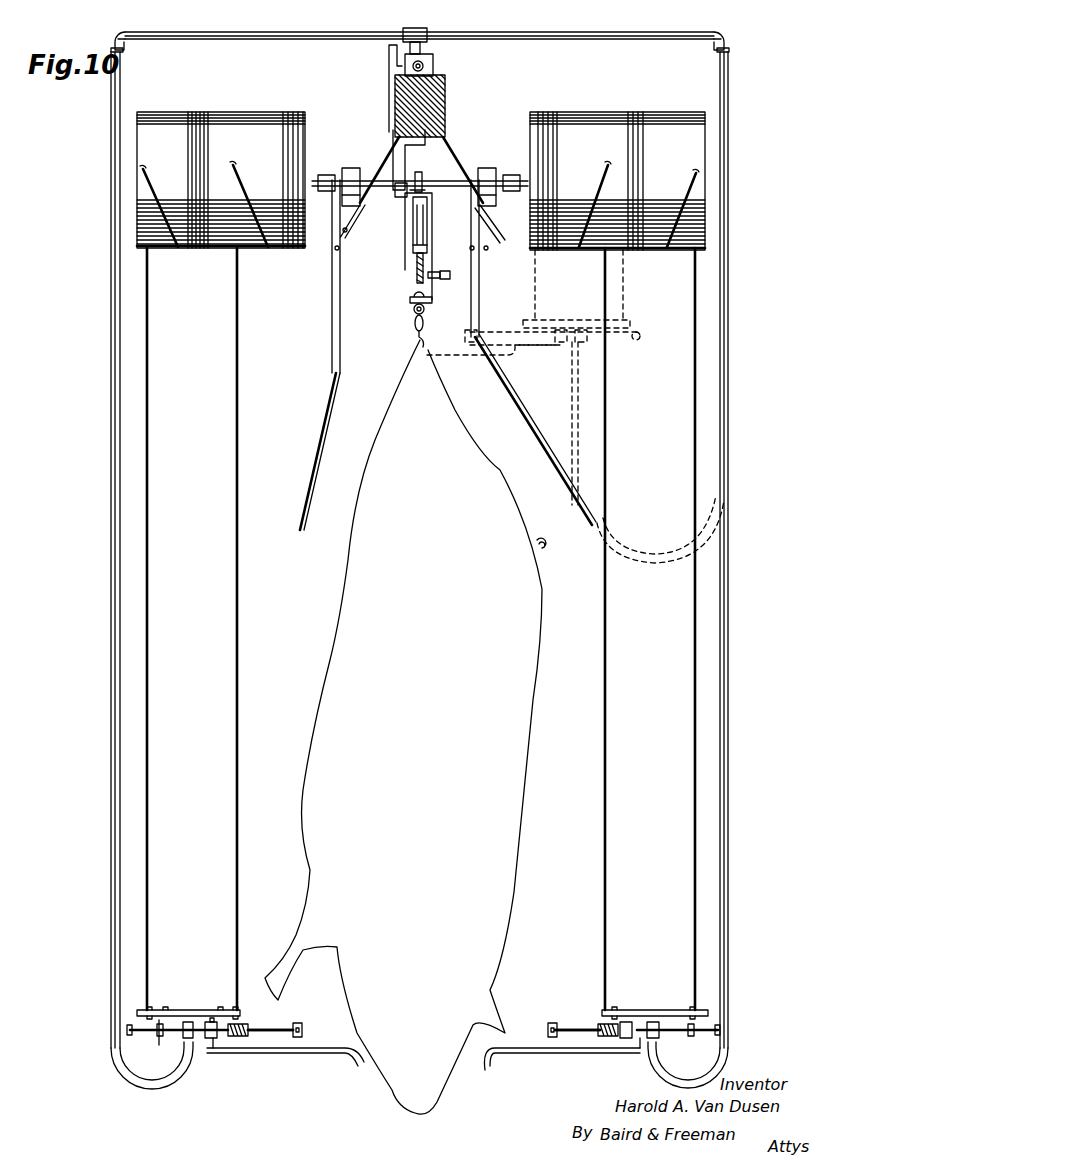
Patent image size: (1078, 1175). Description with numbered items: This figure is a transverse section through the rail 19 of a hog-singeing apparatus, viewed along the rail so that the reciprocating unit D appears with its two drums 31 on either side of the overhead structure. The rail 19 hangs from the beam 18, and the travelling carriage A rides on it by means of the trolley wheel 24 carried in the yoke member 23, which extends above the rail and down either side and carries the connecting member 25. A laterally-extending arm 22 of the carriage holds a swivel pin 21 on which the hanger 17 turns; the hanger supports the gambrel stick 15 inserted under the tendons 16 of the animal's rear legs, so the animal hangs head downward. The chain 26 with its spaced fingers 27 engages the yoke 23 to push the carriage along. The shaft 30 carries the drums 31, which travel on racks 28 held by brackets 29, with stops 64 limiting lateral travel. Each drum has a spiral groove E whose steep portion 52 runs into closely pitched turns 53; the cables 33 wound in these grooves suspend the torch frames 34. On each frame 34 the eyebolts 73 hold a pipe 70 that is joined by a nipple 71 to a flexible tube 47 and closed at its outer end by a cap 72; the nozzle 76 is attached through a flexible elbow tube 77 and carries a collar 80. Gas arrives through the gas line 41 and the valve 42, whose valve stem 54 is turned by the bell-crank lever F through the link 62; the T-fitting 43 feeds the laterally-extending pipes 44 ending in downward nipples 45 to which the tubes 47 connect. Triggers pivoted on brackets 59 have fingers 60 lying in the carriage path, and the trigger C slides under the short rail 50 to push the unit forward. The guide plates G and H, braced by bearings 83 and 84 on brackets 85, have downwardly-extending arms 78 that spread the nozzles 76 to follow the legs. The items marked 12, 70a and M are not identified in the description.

The carcass conveyor rail 12 is at (186, 48).
The gambrel stick 15 is at (419, 340).
The tendons 16 is at (440, 356).
The hanger 17 is at (415, 325).
The beam 18 is at (447, 78).
The rail 19 is at (414, 277).
The swivel pin 21 is at (414, 310).
The laterally-extending arm 22 is at (410, 300).
The yoke member 23 is at (425, 264).
The trolley wheel 24 is at (415, 245).
The connecting member 25 is at (412, 215).
The chain 26 is at (446, 280).
The fingers 27 is at (436, 280).
The racks 28 is at (490, 244).
The brackets 29 is at (384, 152).
The shaft 30 is at (445, 182).
The drums 31 is at (234, 120).
The cables 33 is at (236, 566).
The torch frames 34 is at (203, 1010).
The gas line 41 is at (390, 70).
The valve 42 is at (432, 60).
The T-fitting 43 is at (412, 30).
The laterally-extending pipes 44 is at (608, 32).
The nipples 45 is at (112, 44).
The flexible tubes 47 is at (108, 548).
The short rail 50 is at (422, 174).
The groove portions 52 is at (238, 156).
The groove portions 53 is at (196, 156).
The valve stem 54 is at (436, 60).
The brackets 59 is at (396, 178).
The fingers 60 is at (403, 197).
The link 62 is at (392, 87).
The stops 64 is at (350, 168).
The pipes 70 is at (137, 1036).
The hook bar 70a is at (343, 1058).
The nipples 71 is at (187, 1022).
The caps 72 is at (126, 1031).
The eyebolts 73 is at (161, 1037).
The nozzles 76 is at (295, 1040).
The flexible elbow tubes 77 is at (240, 1040).
The downwardly-extending arms 78 is at (318, 461).
The collars 80 is at (298, 1022).
The bearings 83 is at (470, 205).
The bearings 84 is at (330, 174).
The brackets 85 is at (338, 225).
The travelling carriage A is at (434, 208).
The trigger C is at (422, 183).
The reciprocating unit D is at (262, 120).
The spiral grooves E is at (205, 145).
The bell-crank lever F is at (390, 58).
The guide plate G is at (528, 426).
The guide plate H is at (326, 428).
The carcass M is at (532, 688).